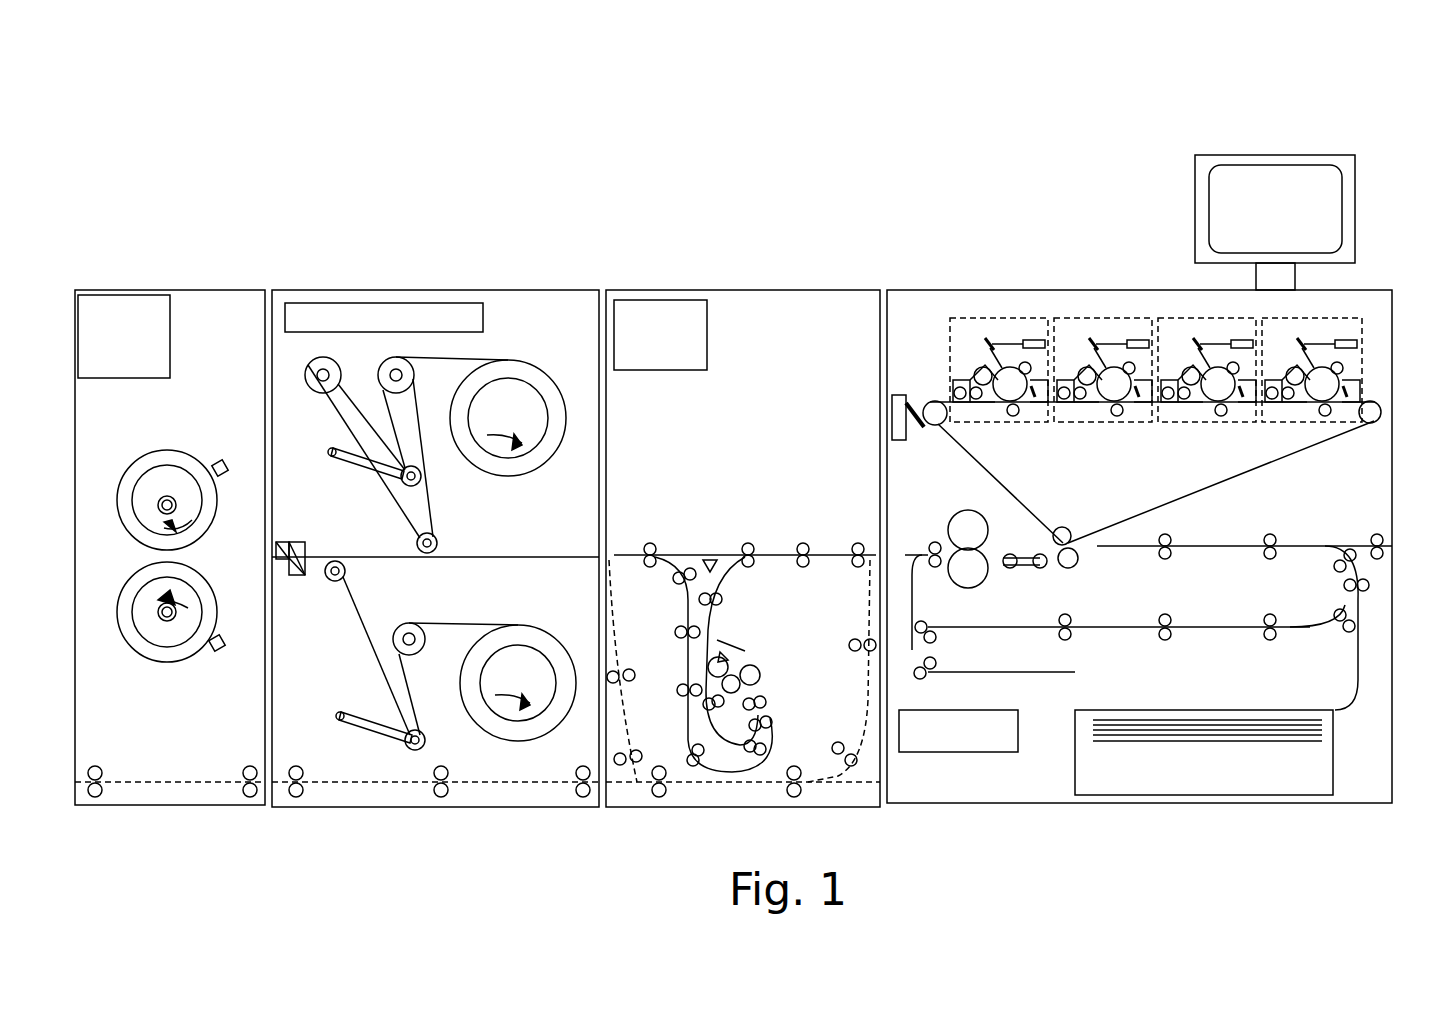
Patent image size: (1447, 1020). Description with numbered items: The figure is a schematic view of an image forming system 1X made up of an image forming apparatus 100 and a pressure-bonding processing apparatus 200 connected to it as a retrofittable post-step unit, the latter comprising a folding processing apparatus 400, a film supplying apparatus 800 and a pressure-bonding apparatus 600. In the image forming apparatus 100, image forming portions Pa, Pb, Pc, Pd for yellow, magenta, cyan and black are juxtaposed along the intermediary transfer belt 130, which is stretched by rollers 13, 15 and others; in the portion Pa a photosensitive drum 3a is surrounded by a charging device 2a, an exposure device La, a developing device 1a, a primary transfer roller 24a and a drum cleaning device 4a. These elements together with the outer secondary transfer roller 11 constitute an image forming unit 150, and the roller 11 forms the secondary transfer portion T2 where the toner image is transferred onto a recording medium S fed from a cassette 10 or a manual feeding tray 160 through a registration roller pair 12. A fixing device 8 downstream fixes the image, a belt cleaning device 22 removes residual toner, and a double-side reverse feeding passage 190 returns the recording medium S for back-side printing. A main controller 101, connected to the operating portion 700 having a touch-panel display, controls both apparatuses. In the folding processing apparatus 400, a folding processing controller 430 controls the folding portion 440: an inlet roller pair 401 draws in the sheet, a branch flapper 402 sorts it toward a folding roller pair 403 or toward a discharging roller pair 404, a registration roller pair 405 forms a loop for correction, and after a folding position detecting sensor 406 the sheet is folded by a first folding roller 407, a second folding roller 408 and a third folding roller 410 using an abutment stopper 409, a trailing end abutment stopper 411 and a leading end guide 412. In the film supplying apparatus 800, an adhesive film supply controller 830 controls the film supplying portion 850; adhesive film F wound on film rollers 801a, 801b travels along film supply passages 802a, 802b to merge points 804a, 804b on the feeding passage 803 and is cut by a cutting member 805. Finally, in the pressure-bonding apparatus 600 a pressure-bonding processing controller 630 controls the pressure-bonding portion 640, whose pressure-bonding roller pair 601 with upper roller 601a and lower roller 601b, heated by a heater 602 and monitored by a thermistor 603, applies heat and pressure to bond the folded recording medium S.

The image forming system 1X is at (1107, 220).
The pressure-bonding processing apparatus 200 is at (611, 243).
The image forming apparatus 100 is at (960, 288).
The operating portion 700 is at (1325, 155).
The pressure-bonding apparatus 600 is at (181, 290).
The pressure-bonding processing controller 630 is at (172, 320).
The pressure-bonding portion 640 is at (198, 432).
The pressure-bonding roller pair 601 is at (133, 667).
The upper roller 601a is at (163, 453).
The lower roller 601b is at (158, 660).
The heater 602 is at (165, 505).
The thermistor 603 is at (224, 476).
The film supplying apparatus 800 is at (440, 290).
The adhesive film supply controller 830 is at (483, 318).
The film supply passage 802a is at (420, 360).
The film supply passage 802b is at (470, 622).
The film supplying portion 850 is at (350, 530).
The adhesive film F is at (423, 509).
The merge point 804a is at (438, 547).
The merge point 804b is at (346, 567).
The film roller 801a is at (522, 473).
The film roller 801b is at (550, 645).
The feeding passage 803 is at (505, 557).
The cutting member 805 is at (300, 578).
The folding processing apparatus 400 is at (716, 290).
The folding processing controller 430 is at (708, 320).
The folding portion 440 is at (768, 490).
The inlet roller pair 401 is at (856, 545).
The branch flapper 402 is at (706, 555).
The folding roller pair 403 is at (722, 596).
The discharging roller pair 404 is at (648, 545).
The registration roller pair 405 is at (701, 708).
The folding position detecting sensor 406 is at (748, 742).
The first folding roller 407 is at (712, 680).
The second folding roller 408 is at (760, 702).
The abutment stopper 409 is at (740, 640).
The third folding roller 410 is at (760, 675).
The trailing end abutment stopper 411 is at (698, 657).
The leading end guide 412 is at (732, 663).
The developing device 1a is at (955, 379).
The roller 13 is at (926, 410).
The belt cleaning device 22 is at (915, 440).
The fixing device 8 is at (968, 520).
The primary transfer roller 24a is at (1013, 411).
The photosensitive drum 3a is at (1012, 390).
The drum cleaning device 4a is at (1032, 397).
The charging device 2a is at (1052, 402).
The image forming portion Pa is at (999, 352).
The image forming portion Pb is at (1103, 352).
The image forming portion Pc is at (1207, 352).
The image forming portion Pd is at (1312, 352).
The exposure device La is at (1030, 345).
The intermediary transfer belt 130 is at (1293, 453).
The roller 15 is at (1370, 422).
The manual feeding tray 160 is at (1392, 546).
The image forming unit 150 is at (1185, 514).
The secondary transfer portion T2 is at (1075, 540).
The outer secondary transfer roller 11 is at (1066, 567).
The registration roller pair 12 is at (1165, 561).
The double-side reverse feeding passage 190 is at (913, 608).
The recording medium S is at (1208, 717).
The cassette 10 is at (1167, 717).
The main controller 101 is at (967, 752).